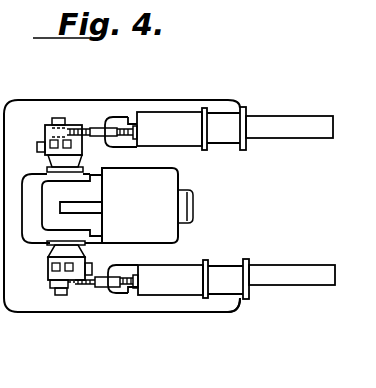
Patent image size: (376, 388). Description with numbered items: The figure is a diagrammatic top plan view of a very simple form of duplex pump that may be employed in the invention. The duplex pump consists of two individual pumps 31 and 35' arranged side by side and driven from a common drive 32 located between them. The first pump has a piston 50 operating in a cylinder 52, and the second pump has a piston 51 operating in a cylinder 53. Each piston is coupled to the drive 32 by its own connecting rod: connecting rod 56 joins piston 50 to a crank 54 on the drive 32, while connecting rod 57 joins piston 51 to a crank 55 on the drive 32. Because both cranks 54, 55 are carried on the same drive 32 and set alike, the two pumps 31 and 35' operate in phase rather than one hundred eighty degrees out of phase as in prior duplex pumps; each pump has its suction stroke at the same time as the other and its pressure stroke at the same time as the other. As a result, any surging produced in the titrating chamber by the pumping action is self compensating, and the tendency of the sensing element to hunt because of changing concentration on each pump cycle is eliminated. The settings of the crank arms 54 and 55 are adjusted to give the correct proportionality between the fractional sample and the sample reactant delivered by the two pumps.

The pump 31 is at (202, 98).
The drive 32 is at (156, 212).
The pump 35' is at (213, 322).
The piston 50 is at (127, 117).
The piston 51 is at (133, 288).
The cylinder 52 is at (160, 118).
The cylinder 53 is at (178, 268).
The crank 54 is at (45, 135).
The crank 55 is at (48, 287).
The connecting rod 56 is at (82, 127).
The connecting rod 57 is at (87, 286).